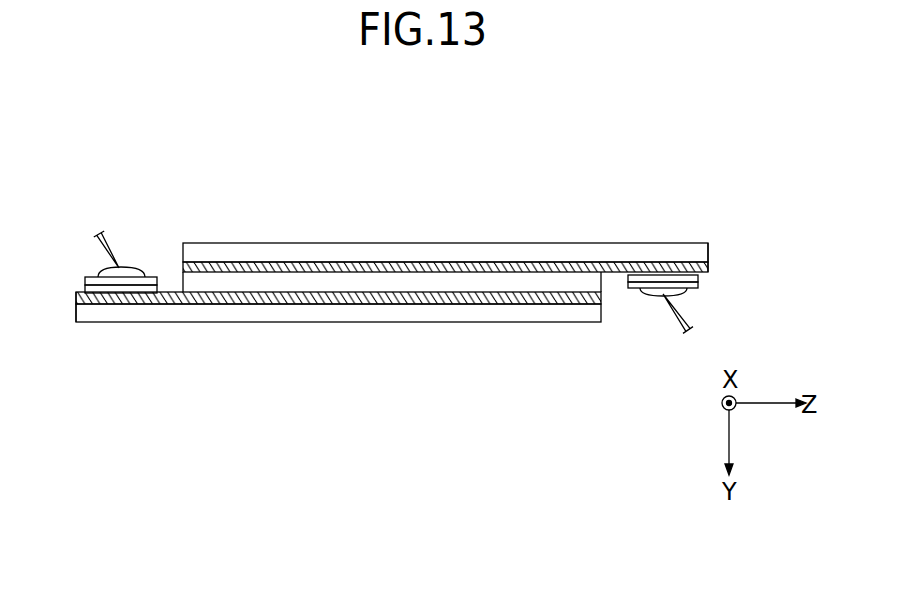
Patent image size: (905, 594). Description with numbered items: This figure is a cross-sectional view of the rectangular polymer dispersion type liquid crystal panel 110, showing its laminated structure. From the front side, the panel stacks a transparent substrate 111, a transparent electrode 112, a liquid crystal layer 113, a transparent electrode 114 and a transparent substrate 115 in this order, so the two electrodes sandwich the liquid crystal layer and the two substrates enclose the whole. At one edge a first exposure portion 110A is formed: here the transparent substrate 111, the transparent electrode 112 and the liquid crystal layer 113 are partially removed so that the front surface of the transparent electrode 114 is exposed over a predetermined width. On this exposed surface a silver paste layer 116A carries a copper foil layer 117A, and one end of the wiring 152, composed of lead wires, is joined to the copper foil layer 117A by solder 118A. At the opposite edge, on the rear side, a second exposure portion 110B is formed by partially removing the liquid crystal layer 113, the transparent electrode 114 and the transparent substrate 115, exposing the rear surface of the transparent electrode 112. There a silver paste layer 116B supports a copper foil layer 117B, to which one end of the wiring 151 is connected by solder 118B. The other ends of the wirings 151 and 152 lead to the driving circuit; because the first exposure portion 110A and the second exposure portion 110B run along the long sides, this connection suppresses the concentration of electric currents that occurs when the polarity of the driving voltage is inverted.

The polymer dispersion type liquid crystal panel 110 is at (82, 176).
The first exposure portion 110A is at (84, 291).
The second exposure portion 110B is at (703, 273).
The transparent substrate 111 is at (282, 252).
The transparent electrode 112 is at (338, 265).
The liquid crystal layer 113 is at (395, 280).
The transparent electrode 114 is at (450, 298).
The transparent substrate 115 is at (507, 312).
The silver paste layer 116A is at (107, 289).
The silver paste layer 116B is at (680, 278).
The copper foil layer 117A is at (140, 282).
The copper foil layer 117B is at (647, 284).
The solder 118A is at (128, 268).
The solder 118B is at (653, 295).
The wiring 151 is at (677, 326).
The wiring 152 is at (112, 258).